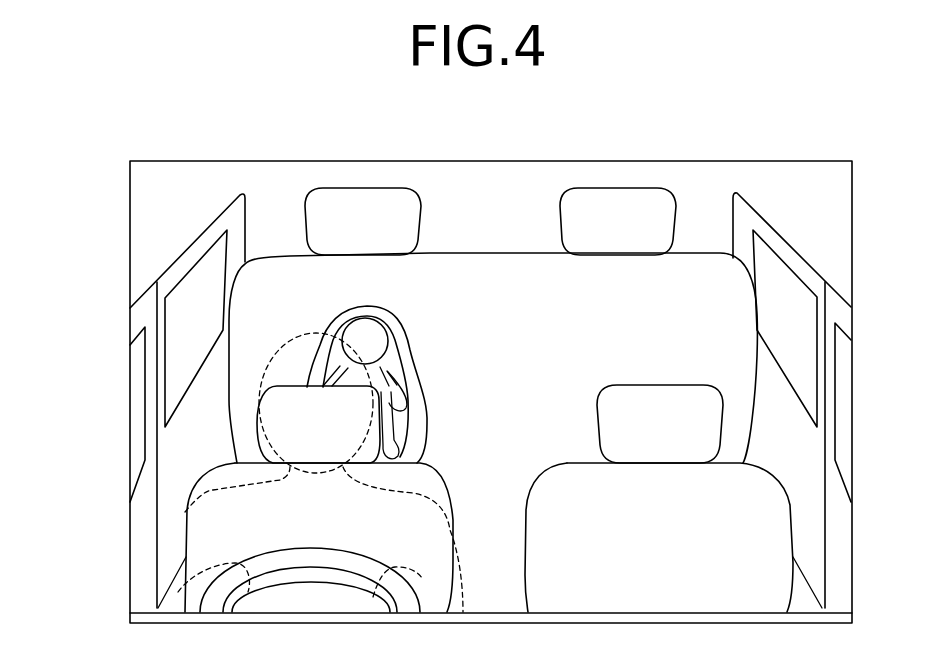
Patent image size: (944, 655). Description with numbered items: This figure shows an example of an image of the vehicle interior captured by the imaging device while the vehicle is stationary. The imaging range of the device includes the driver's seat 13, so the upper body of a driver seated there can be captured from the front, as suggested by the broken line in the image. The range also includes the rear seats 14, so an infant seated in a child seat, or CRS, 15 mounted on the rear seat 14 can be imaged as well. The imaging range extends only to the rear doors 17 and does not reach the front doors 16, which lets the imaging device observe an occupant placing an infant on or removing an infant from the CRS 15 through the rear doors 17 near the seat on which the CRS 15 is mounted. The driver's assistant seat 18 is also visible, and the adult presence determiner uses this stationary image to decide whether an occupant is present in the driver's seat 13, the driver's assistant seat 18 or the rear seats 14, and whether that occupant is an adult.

The driver's seat 13 is at (200, 545).
The rear seats 14 is at (478, 272).
The child seat (CRS) 15 is at (397, 323).
The front doors 16 is at (128, 325).
The rear doors 17 is at (182, 258).
The driver's assistant seat 18 is at (768, 538).